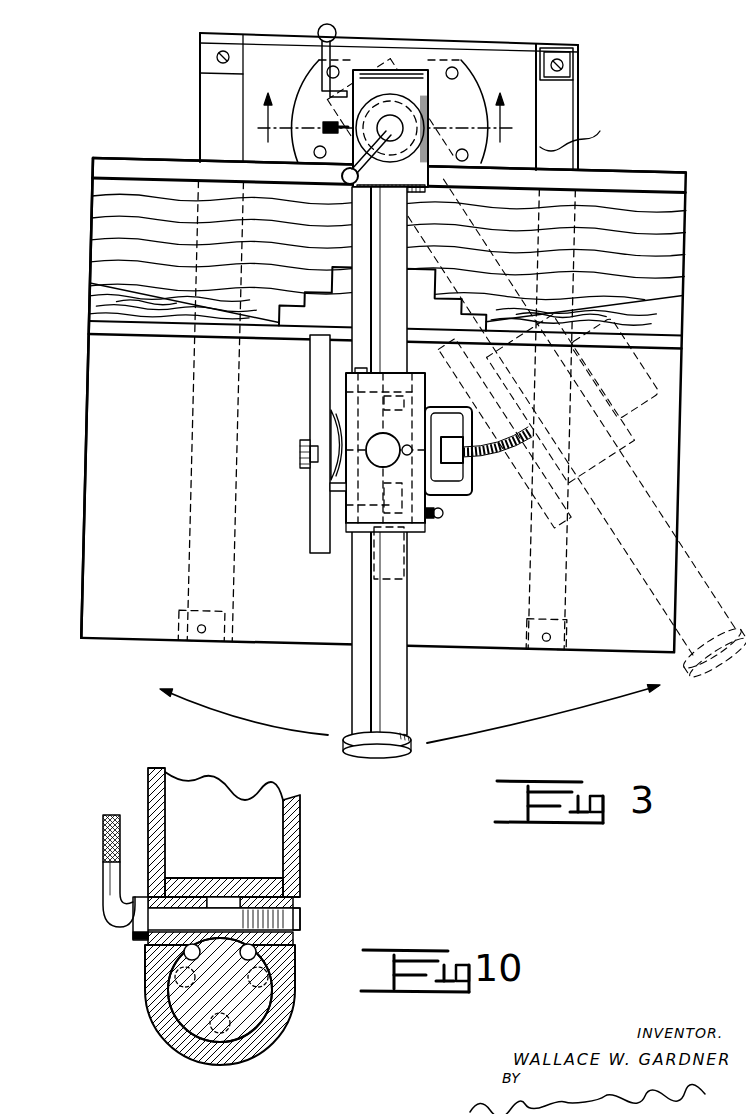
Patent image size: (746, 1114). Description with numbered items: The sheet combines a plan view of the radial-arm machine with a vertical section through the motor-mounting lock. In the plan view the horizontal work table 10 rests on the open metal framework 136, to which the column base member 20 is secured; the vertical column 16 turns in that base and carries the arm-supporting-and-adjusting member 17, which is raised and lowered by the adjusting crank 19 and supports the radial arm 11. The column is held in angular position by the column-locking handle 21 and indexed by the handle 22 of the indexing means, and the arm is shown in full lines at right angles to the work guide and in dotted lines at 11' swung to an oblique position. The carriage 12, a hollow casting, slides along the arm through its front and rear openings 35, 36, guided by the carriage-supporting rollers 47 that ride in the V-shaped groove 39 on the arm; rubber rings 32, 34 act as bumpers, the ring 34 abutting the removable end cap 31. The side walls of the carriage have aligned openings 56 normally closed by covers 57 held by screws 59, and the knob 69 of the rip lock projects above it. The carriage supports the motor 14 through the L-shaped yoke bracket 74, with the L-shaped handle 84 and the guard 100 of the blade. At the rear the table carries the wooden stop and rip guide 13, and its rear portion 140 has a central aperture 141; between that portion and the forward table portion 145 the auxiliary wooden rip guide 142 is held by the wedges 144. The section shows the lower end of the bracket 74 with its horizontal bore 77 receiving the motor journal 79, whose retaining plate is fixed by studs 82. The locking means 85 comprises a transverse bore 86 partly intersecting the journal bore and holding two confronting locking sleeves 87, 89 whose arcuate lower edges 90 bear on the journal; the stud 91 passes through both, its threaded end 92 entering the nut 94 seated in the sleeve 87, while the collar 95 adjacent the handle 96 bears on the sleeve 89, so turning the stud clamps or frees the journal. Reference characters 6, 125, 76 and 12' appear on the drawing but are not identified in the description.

In FIG. 3, the work table 10 is at (694, 212).
In FIG. 3, the radial arm 11 is at (355, 461).
In FIG. 3, the carriage 12 is at (362, 487).
In FIG. 3, the rear work-guide 13 is at (665, 178).
In FIG. 3, the motor 14 is at (448, 497).
In FIG. 3, the vertical column 16 is at (382, 72).
In FIG. 3, the arm-supporting-and-adjusting member 17 is at (425, 72).
In FIG. 3, the adjusting crank 19 is at (343, 182).
In FIG. 3, the column base member 20 is at (438, 100).
In FIG. 3, the column-locking handle 21 is at (318, 68).
In FIG. 3, the column-indexing handle 22 is at (318, 131).
In FIG. 3, the section line 6 is at (384, 117).
In FIG. 3, the bearing ring 125 is at (442, 121).
In FIG. 3, the open metal framework 136 is at (585, 141).
In FIG. 3, the removable end cap 31 is at (387, 758).
In FIG. 3, the rubber ring 32 is at (356, 188).
In FIG. 3, the rubber ring 34 is at (417, 742).
In FIG. 3, the front opening 35 is at (362, 532).
In FIG. 3, the rear opening 36 is at (326, 367).
In FIG. 3, the V-shaped groove 39 is at (380, 628).
In FIG. 3, the carriage-supporting rollers 47 is at (412, 376).
In FIG. 3, the aligned openings 56 is at (330, 488).
In FIG. 3, the covers 57 is at (334, 470).
In FIG. 3, the screws 59 is at (334, 448).
In FIG. 3, the knob 69 is at (424, 396).
In FIG. 3, the L-shaped handle 84 is at (404, 580).
In FIG. 3, the handle 96 is at (442, 516).
In FIG. 10, the handle 96 is at (108, 866).
In FIG. 3, the guard 100 is at (322, 394).
In FIG. 3, the rear table portion 140 is at (672, 266).
In FIG. 3, the central aperture 141 is at (344, 283).
In FIG. 3, the auxiliary wooden rip guide 142 is at (165, 338).
In FIG. 3, the wedges 144 is at (93, 308).
In FIG. 3, the forward table portion 145 is at (84, 572).
In FIG. 3, the angularly adjusted arm position 11' is at (518, 367).
In FIG. 3, the carriage tilted position 12' is at (669, 435).
In FIG. 10, the yoke bracket 74 is at (299, 868).
In FIG. 10, the housing 76 is at (203, 1054).
In FIG. 10, the central horizontal bore 77 is at (251, 1034).
In FIG. 10, the horizontal journal 79 is at (188, 1012).
In FIG. 10, the studs 82 is at (282, 1003).
In FIG. 10, the locking means 85 is at (135, 953).
In FIG. 10, the transverse bore 86 is at (292, 897).
In FIG. 10, the locking sleeve 87 is at (293, 903).
In FIG. 10, the locking sleeve 89 is at (140, 912).
In FIG. 10, the arcuate lower edge 90 is at (257, 953).
In FIG. 10, the stud 91 is at (214, 908).
In FIG. 10, the threaded end 92 is at (300, 920).
In FIG. 10, the nut 94 is at (294, 940).
In FIG. 10, the collar 95 is at (136, 898).